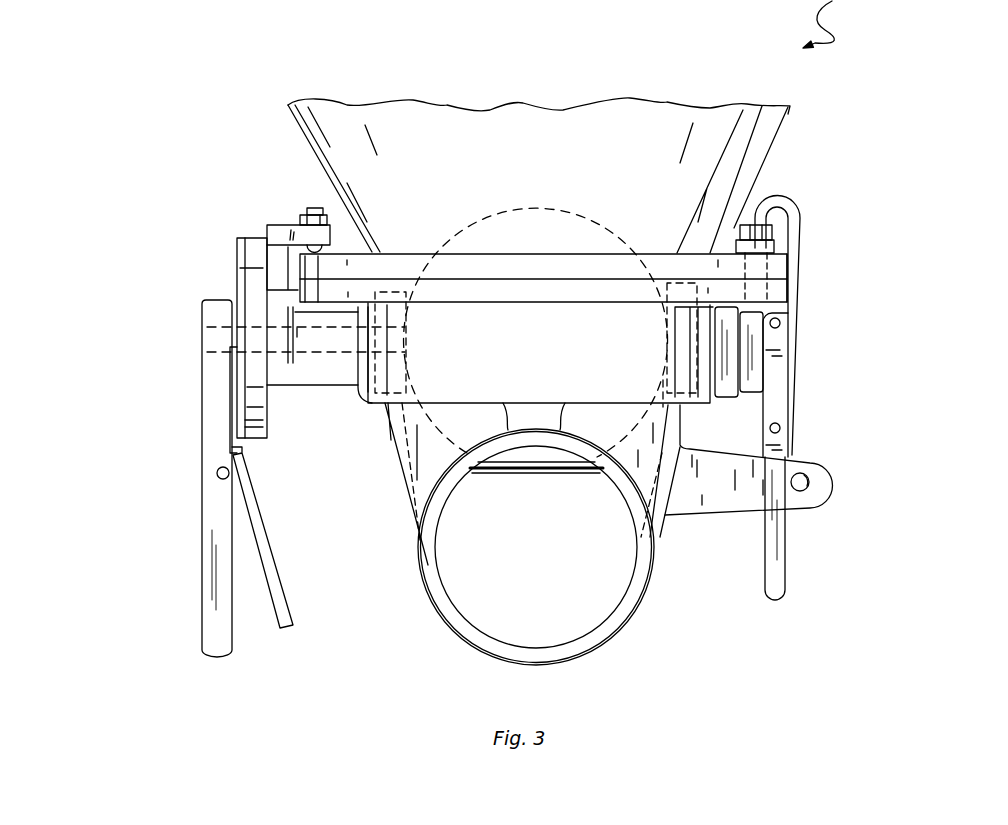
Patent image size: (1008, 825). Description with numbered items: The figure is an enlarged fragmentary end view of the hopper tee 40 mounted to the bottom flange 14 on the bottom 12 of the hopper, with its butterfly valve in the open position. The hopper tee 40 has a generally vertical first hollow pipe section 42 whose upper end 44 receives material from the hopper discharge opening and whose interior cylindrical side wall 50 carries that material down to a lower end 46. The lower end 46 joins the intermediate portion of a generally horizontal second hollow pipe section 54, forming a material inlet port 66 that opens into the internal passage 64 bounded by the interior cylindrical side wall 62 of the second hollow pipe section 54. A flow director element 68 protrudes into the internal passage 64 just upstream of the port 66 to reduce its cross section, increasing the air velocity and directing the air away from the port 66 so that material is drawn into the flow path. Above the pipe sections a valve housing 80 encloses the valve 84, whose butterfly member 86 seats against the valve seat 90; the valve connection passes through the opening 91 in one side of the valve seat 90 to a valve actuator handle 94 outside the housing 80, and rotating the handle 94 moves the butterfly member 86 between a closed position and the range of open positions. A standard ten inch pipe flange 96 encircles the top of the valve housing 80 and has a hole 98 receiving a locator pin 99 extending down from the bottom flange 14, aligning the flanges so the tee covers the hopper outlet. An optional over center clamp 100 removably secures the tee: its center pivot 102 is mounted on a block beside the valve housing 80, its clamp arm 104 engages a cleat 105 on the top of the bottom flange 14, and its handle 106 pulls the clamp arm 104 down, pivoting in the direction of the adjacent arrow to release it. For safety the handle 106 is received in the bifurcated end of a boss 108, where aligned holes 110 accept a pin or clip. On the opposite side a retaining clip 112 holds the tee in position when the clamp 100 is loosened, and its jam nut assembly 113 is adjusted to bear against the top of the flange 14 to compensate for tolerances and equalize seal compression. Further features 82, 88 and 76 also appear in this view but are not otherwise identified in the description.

The bottom 12 is at (290, 115).
The bottom flange 14 is at (298, 268).
The jam nut assembly 113 is at (313, 207).
The retaining clip 112 is at (330, 235).
The housing 82 is at (420, 237).
The valve 84 is at (547, 203).
The butterfly member 86 is at (600, 209).
The flange 96 is at (457, 253).
The valve seat 90 is at (662, 287).
The opening in valve seat 91 is at (400, 340).
The bearing 88 is at (302, 367).
The upper end 44 is at (358, 363).
The interior cylindrical side wall 50 is at (417, 422).
The lower end 46 is at (410, 510).
The material inlet port 66 is at (533, 420).
The first hollow pipe section 42 is at (683, 413).
The valve housing 80 is at (713, 404).
The center pivot 102 is at (776, 328).
The clamp arm 104 is at (798, 211).
The cleat 105 is at (780, 210).
The clamp 100 is at (807, 248).
The locator pin 99 is at (768, 262).
The hole 98 is at (800, 305).
The aligned holes 110 is at (809, 486).
The boss 108 is at (816, 500).
The handle 106 is at (786, 600).
The valve actuator handle 94 is at (233, 645).
The hopper tee 40 is at (548, 562).
The second hollow pipe section 54 is at (642, 597).
The interior cylindrical side wall 62 is at (460, 613).
The flow director element 68 is at (529, 477).
The tube edge 76 is at (445, 498).
The internal passage 64 is at (555, 576).